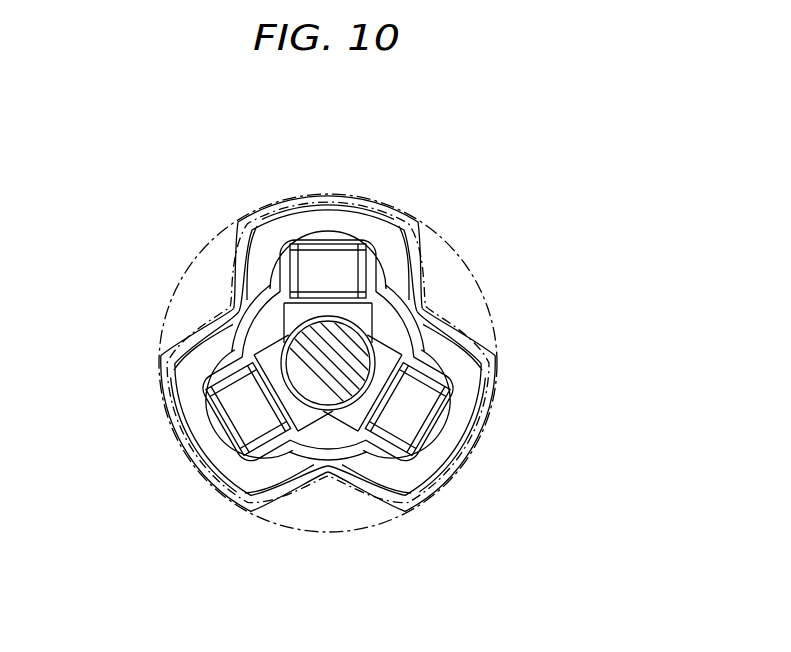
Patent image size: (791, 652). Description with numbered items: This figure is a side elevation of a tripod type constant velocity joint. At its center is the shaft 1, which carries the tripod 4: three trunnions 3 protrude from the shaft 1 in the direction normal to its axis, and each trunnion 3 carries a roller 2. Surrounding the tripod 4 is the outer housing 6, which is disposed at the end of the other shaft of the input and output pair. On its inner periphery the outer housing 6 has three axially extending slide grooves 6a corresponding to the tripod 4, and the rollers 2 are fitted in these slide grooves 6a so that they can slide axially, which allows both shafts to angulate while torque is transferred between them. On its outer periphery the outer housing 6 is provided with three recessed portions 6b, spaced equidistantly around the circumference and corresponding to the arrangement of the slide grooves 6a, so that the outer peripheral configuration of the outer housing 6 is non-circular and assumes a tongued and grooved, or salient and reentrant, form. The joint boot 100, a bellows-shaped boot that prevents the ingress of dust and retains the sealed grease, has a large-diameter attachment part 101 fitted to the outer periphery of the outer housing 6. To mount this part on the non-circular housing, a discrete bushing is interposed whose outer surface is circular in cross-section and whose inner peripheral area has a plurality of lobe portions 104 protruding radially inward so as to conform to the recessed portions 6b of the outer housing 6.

The shaft 1 is at (332, 377).
The roller 2 is at (283, 267).
The trunnion 3 is at (338, 262).
The tripod 4 is at (273, 333).
The outer housing 6 is at (352, 373).
The slide groove 6a is at (410, 218).
The recessed portion 6b is at (413, 287).
The joint boot 100 is at (355, 364).
The large-diameter attachment part 101 is at (477, 290).
The lobe portion 104 is at (427, 312).